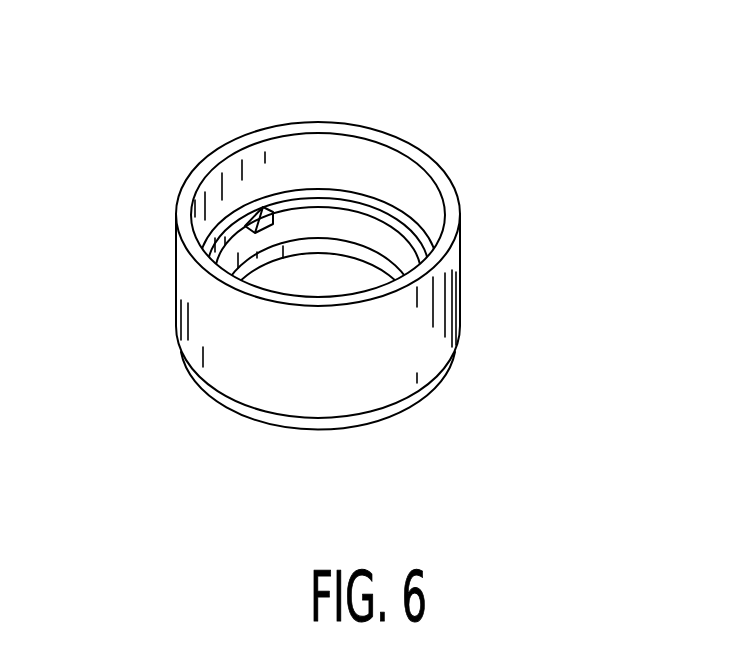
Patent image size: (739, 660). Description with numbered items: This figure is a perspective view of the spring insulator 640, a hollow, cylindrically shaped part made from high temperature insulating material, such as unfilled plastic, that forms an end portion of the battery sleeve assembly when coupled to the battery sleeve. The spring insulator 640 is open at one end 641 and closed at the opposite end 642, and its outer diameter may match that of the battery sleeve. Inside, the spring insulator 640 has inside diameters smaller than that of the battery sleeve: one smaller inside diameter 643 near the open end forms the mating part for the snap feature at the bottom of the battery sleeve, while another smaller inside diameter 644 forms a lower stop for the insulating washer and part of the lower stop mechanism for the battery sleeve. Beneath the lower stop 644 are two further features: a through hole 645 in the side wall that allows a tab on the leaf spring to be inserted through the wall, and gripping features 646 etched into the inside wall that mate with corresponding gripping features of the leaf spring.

The spring insulator 640 is at (330, 268).
The open end 641 is at (302, 155).
The closed end 642 is at (374, 413).
The smaller inside diameter 643 is at (245, 130).
The smaller inside diameter 644 is at (376, 195).
The through hole 645 is at (243, 231).
The gripping features 646 is at (363, 233).